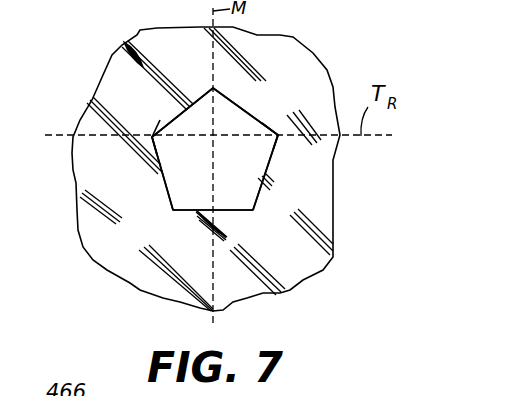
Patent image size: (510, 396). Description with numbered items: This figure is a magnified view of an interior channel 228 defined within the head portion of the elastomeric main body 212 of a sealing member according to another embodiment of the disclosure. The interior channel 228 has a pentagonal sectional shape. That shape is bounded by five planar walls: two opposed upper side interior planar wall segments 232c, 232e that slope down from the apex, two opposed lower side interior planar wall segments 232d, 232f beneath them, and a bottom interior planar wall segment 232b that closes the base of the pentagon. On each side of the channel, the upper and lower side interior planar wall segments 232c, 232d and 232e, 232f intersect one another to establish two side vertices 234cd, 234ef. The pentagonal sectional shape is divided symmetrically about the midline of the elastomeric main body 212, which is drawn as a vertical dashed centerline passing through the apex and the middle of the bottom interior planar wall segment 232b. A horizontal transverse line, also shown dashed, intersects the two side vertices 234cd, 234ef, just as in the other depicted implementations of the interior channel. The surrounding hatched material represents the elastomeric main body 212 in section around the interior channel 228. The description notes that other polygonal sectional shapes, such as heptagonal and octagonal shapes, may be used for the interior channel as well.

The elastomeric main body 212 is at (126, 46).
The interior channel 228 is at (218, 171).
The bottom interior planar wall segment 232b is at (231, 234).
The upper side interior planar wall segment 232c is at (186, 106).
The lower side interior planar wall segment 232d is at (167, 185).
The upper side interior planar wall segment 232e is at (238, 104).
The lower side interior planar wall segment 232f is at (272, 158).
The side vertex 234cd is at (152, 137).
The side vertex 234ef is at (278, 135).